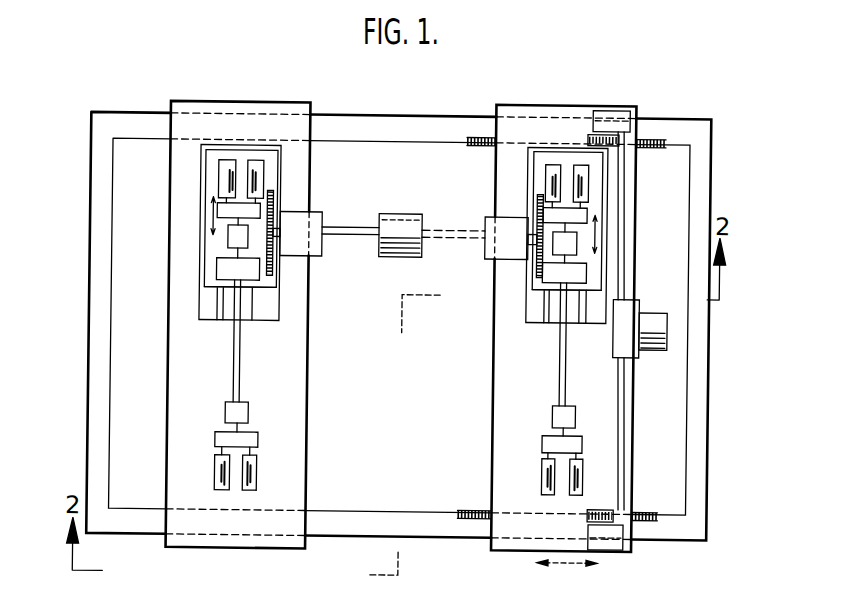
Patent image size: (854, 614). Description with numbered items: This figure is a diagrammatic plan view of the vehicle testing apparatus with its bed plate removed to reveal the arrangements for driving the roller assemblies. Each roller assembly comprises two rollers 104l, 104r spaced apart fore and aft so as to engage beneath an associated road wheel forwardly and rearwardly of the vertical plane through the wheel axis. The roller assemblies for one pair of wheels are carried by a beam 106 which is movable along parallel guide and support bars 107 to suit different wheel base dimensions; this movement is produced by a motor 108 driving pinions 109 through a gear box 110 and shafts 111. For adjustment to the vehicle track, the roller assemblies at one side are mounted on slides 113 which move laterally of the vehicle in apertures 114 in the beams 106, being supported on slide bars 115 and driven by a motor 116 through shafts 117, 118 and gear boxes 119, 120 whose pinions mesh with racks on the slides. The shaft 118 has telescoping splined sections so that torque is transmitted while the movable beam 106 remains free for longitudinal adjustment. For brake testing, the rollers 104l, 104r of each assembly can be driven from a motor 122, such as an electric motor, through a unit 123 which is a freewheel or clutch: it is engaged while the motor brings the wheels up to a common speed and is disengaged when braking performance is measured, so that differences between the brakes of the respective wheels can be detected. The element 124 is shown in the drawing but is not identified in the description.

The roller 104r is at (222, 158).
The roller 104l is at (248, 481).
The beam 106 is at (565, 110).
The guide and support bars 107 is at (660, 127).
The motor 108 is at (650, 350).
The pinions 109 is at (605, 146).
The gear box 110 is at (634, 318).
The shafts 111 is at (623, 285).
The slides 113 is at (208, 272).
The apertures 114 is at (232, 318).
The slide bars 115 is at (253, 298).
The motor 116 is at (398, 225).
The shaft 117 is at (350, 231).
The shaft 118 is at (475, 231).
The gear box 119 is at (316, 215).
The gear box 120 is at (496, 222).
The motor 122 is at (235, 265).
The unit 123 is at (230, 237).
The holder 124 is at (232, 212).